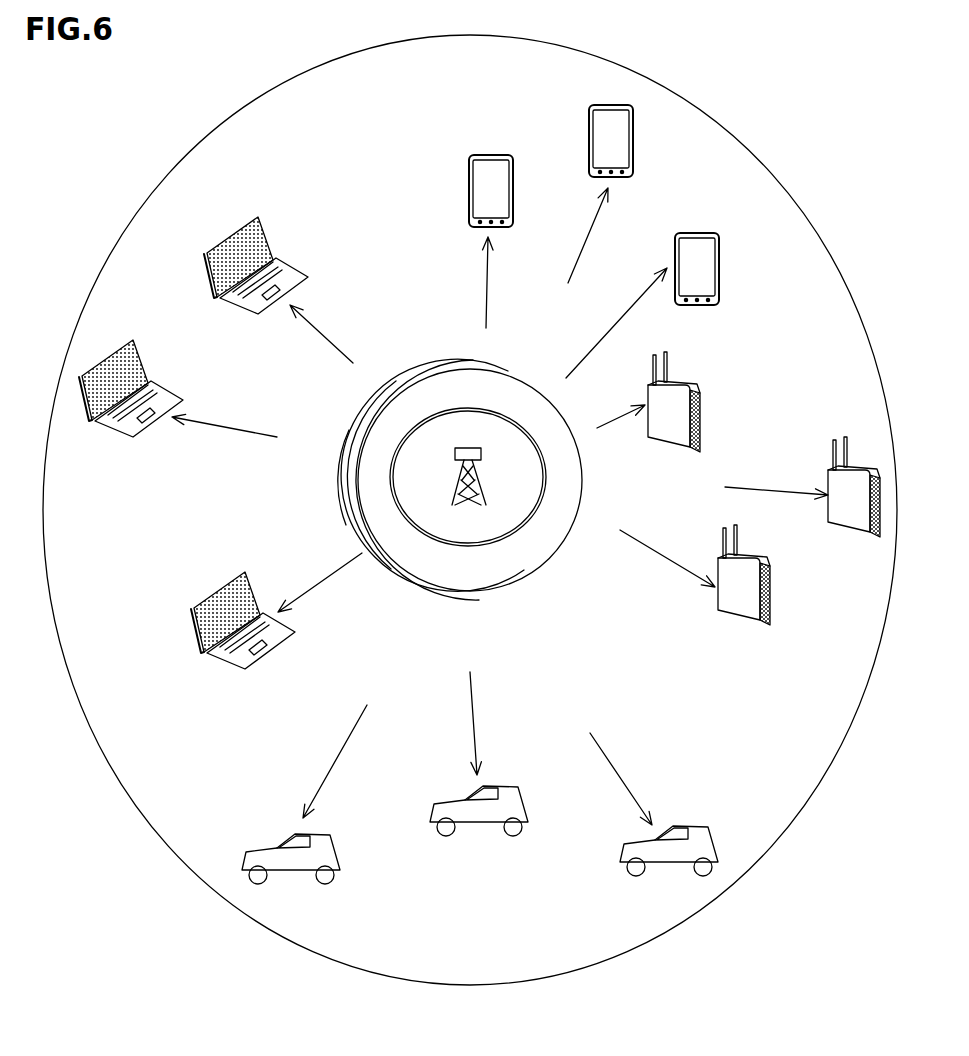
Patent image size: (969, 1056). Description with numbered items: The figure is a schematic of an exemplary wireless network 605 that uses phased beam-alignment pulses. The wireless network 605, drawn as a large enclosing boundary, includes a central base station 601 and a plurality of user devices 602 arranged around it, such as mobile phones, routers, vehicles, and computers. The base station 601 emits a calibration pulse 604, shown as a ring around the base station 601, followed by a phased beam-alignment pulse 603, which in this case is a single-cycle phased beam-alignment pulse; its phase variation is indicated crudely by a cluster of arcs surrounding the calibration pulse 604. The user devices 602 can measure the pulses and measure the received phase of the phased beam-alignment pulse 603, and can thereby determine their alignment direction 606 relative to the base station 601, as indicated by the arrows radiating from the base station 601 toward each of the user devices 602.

The base station 601 is at (484, 497).
The user devices 602 is at (469, 168).
The phased beam-alignment pulse 603 is at (528, 572).
The calibration pulse 604 is at (512, 530).
The wireless network 605 is at (251, 100).
The alignment direction 606 is at (485, 303).